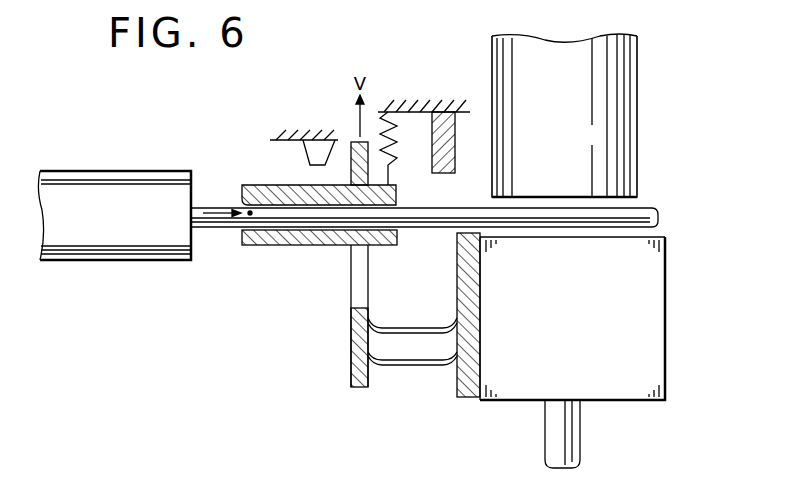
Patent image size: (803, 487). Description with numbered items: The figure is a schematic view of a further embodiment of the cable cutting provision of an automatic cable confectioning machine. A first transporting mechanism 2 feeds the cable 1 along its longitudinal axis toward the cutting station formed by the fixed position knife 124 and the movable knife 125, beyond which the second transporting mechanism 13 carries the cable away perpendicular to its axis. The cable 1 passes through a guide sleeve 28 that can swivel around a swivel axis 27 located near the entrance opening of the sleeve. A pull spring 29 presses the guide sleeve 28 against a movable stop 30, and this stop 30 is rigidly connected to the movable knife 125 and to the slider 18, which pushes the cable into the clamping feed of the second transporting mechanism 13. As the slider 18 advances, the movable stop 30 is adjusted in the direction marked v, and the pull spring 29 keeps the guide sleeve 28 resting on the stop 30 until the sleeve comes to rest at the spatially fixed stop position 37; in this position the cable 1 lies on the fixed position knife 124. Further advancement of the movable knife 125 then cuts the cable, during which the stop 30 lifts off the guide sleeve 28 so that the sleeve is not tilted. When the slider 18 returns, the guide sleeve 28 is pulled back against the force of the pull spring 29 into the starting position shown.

The cable 1 is at (197, 218).
The first transporting mechanism 2 is at (90, 222).
The second transporting mechanism 13 is at (615, 118).
The slider 18 is at (637, 304).
The swivel axis 27 is at (216, 206).
The guide sleeve 28 is at (283, 247).
The pull spring 29 is at (394, 160).
The movable stop 30 is at (358, 146).
The fixed stop position 37 is at (303, 152).
The fixed position knife 124 is at (455, 150).
The movable knife 125 is at (474, 313).